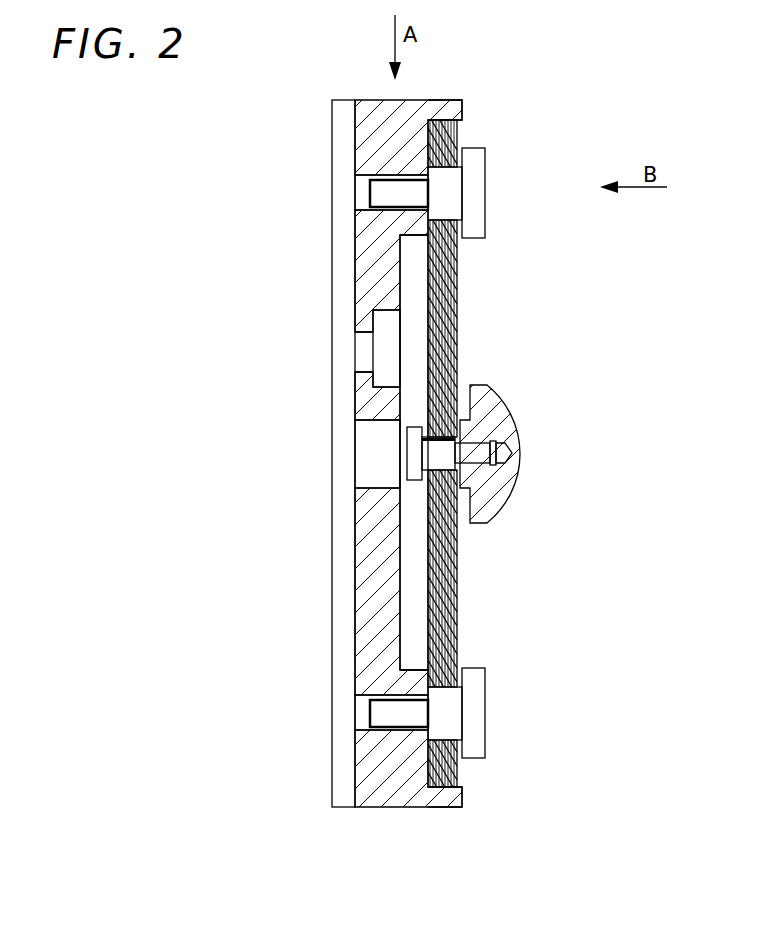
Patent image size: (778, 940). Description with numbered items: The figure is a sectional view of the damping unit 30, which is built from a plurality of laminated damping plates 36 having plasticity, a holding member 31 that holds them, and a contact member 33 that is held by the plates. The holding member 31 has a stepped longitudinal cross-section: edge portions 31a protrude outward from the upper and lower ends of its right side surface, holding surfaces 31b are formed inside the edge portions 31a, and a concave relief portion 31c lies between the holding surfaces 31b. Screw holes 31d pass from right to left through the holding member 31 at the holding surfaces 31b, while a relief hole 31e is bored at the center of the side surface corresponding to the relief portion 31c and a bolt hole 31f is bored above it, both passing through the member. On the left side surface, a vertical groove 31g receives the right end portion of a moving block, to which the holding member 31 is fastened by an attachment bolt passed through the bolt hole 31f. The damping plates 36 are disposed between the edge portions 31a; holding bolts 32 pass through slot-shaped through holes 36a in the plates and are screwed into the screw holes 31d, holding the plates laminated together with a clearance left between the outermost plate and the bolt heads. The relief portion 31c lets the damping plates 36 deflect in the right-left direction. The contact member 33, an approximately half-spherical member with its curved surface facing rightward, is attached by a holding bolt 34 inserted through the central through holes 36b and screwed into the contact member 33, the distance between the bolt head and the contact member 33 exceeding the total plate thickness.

The damping unit 30 is at (680, 299).
The holding member 31 is at (435, 104).
The edge portion 31a is at (457, 113).
The holding surface 31b is at (430, 233).
The relief portion 31c is at (430, 566).
The screw hole 31d is at (358, 178).
The relief hole 31e is at (362, 420).
The bolt hole 31f is at (358, 330).
The groove 31g is at (355, 148).
The holding bolt 32 is at (484, 197).
The contact member 33 is at (513, 452).
The holding bolt 34 is at (410, 458).
The damping plate 36 is at (457, 343).
The through hole 36a is at (455, 156).
The through hole 36b is at (464, 460).